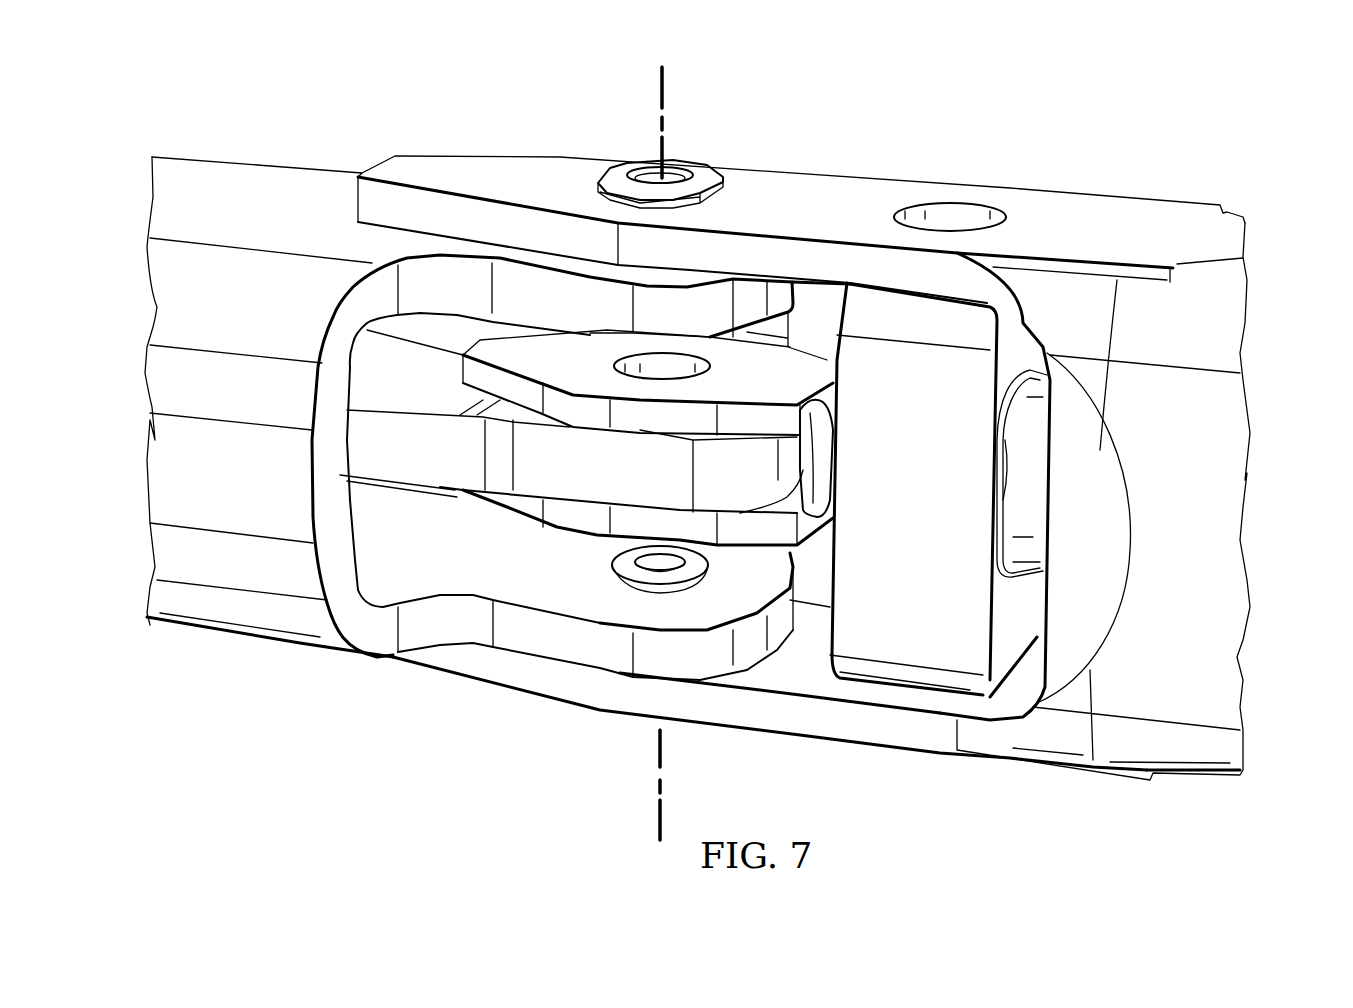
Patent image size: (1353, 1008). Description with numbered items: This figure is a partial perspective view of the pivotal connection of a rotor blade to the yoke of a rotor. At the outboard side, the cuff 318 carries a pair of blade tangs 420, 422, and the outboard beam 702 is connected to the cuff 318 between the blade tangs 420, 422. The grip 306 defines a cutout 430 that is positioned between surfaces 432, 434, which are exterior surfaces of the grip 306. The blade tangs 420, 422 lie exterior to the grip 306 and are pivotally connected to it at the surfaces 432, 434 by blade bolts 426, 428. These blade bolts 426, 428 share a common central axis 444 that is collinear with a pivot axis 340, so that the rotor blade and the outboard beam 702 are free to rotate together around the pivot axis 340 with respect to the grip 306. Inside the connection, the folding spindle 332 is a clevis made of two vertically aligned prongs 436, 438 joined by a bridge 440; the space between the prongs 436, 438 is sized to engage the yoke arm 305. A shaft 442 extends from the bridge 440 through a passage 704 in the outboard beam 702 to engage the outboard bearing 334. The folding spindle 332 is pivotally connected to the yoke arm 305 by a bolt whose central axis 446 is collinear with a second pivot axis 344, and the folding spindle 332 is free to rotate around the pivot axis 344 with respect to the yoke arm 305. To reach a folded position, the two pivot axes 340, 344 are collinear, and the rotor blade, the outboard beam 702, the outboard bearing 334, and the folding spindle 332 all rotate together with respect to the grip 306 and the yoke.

The grip 306 is at (180, 307).
The cuff 318 is at (1223, 497).
The surface 432 is at (223, 173).
The surface 434 is at (273, 643).
The blade tang 420 is at (783, 177).
The blade tang 422 is at (777, 720).
The blade bolt 426 is at (695, 168).
The blade bolt 428 is at (613, 567).
The cutout 430 is at (347, 523).
The prong 436 is at (493, 350).
The prong 438 is at (527, 510).
The bridge 440 is at (803, 465).
The shaft 442 is at (823, 508).
The folding spindle 332 is at (520, 353).
The outboard bearing 334 is at (1020, 510).
The yoke arm 305 is at (410, 460).
The outboard beam 702 is at (910, 637).
The passage 704 is at (1010, 457).
The central axis 444 is at (660, 80).
The pivot axis 340 is at (660, 80).
The central axis 446 is at (657, 820).
The pivot axis 344 is at (657, 820).